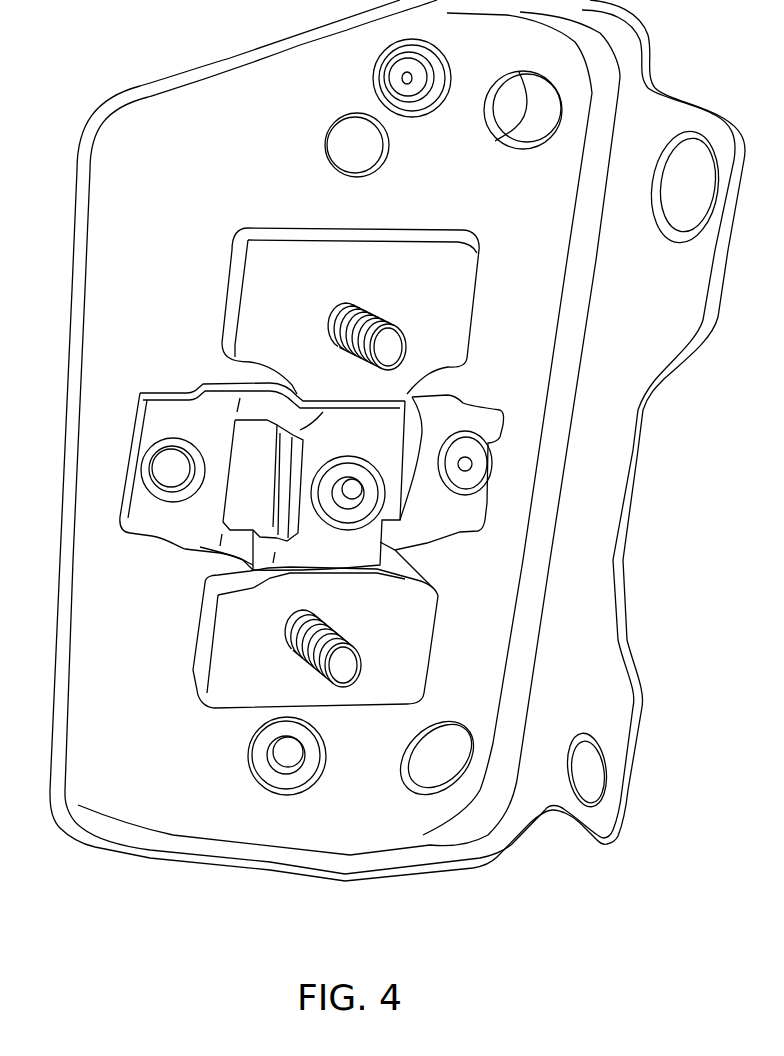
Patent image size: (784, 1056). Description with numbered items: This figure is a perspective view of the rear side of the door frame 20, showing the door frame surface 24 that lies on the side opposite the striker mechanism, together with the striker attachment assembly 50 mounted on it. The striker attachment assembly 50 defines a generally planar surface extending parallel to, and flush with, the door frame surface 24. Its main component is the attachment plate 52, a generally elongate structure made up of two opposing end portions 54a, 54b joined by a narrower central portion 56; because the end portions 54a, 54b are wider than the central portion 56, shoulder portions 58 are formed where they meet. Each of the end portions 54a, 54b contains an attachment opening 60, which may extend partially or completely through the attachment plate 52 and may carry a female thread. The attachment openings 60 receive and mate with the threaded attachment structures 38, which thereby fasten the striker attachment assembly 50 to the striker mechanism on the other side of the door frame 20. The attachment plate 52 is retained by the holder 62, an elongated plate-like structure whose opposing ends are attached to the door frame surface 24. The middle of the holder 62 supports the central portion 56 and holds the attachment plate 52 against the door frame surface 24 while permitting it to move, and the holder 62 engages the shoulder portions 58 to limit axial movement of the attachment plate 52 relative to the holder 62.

The door frame 20 is at (123, 812).
The door frame surface 24 is at (357, 818).
The attachment structures 38 is at (388, 345).
The striker attachment assembly 50 is at (122, 590).
The attachment plate 52 is at (331, 472).
The end portion 54a is at (272, 242).
The end portion 54b is at (223, 708).
The central portion 56 is at (385, 393).
The shoulder portions 58 is at (238, 362).
The attachment openings 60 is at (368, 302).
The holder 62 is at (128, 521).